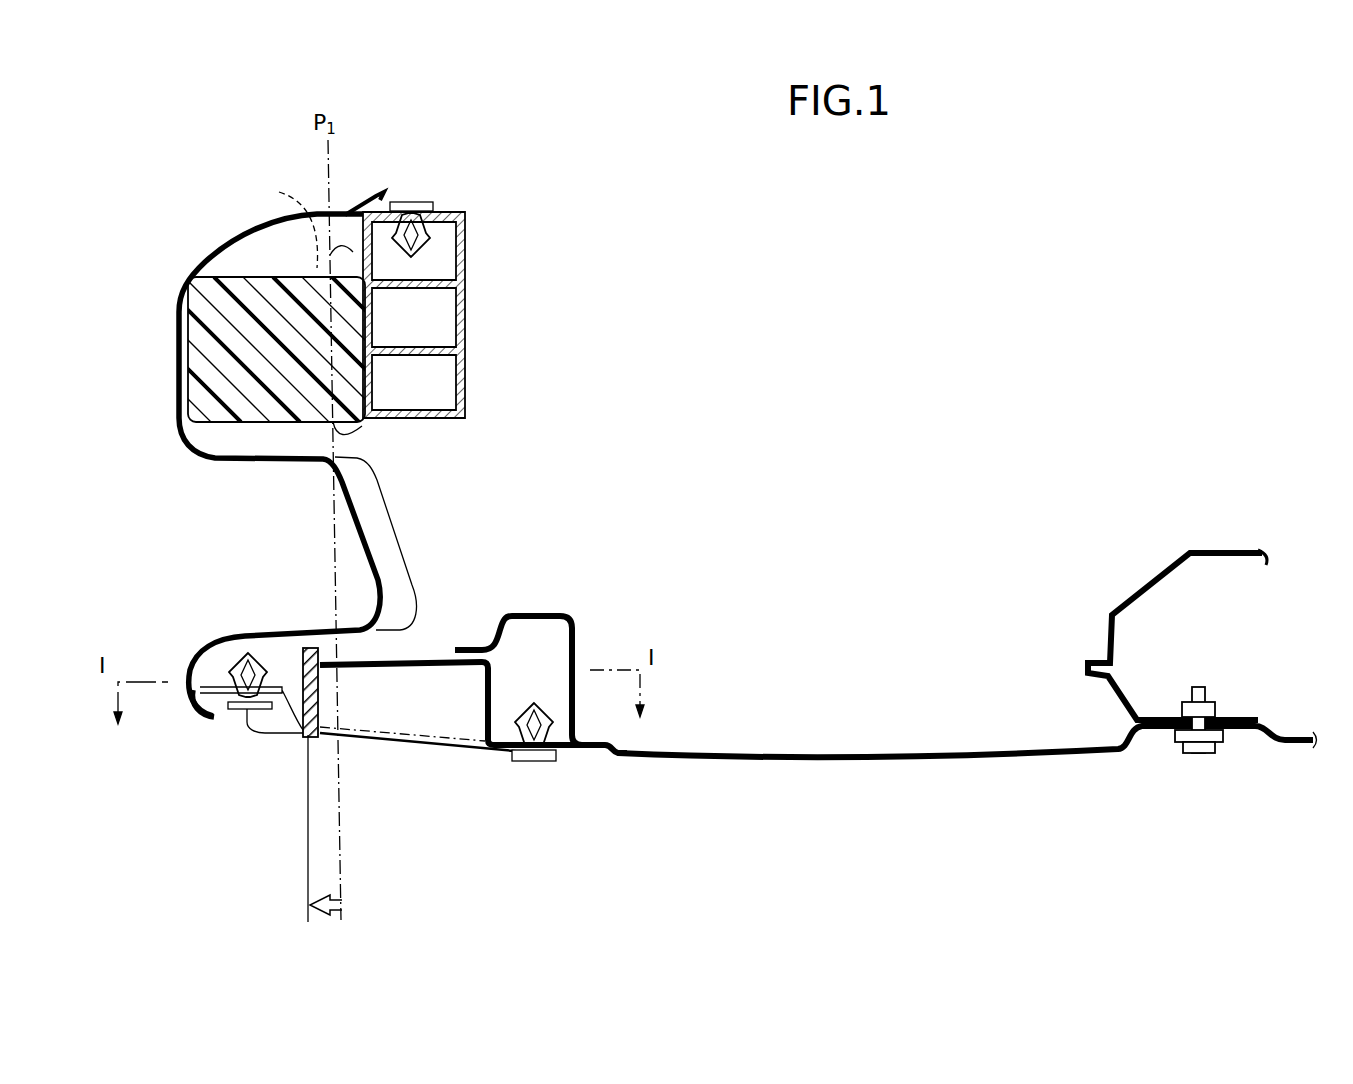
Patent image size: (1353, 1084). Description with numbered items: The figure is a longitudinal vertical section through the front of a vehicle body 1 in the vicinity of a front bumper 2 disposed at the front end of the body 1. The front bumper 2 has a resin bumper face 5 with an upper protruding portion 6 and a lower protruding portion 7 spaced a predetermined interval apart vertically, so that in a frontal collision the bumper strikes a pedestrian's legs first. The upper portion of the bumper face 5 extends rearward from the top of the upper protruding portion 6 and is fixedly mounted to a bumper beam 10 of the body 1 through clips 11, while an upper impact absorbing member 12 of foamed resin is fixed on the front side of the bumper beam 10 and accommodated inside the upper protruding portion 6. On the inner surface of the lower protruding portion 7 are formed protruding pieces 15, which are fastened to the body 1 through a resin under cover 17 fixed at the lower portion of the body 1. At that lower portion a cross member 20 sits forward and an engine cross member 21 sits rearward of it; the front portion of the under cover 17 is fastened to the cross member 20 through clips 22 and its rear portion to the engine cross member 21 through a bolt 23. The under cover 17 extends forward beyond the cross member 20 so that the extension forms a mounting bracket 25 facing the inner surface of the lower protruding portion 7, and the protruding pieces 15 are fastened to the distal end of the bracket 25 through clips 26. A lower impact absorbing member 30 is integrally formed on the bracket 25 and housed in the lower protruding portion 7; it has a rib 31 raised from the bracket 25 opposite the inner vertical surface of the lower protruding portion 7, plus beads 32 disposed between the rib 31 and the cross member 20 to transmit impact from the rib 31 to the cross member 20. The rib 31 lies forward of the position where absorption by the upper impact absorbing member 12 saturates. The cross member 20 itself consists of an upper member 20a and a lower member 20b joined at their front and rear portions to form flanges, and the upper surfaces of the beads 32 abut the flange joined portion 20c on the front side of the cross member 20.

The vehicle body 1 is at (782, 500).
The front bumper 2 is at (189, 165).
The bumper face 5 is at (150, 262).
The upper protruding portion 6 is at (212, 246).
The lower protruding portion 7 is at (192, 658).
The bumper beam 10 is at (468, 248).
The clips 11 is at (408, 201).
The upper impact absorbing member 12 is at (273, 277).
The protruding pieces 15 is at (218, 655).
The under cover 17 is at (876, 783).
The cross member 20 is at (588, 620).
The upper member 20a is at (537, 612).
The lower member 20b is at (500, 754).
The flange joined portion 20c is at (472, 640).
The engine cross member 21 is at (1197, 537).
The clips 22 is at (548, 765).
The bolt 23 is at (1200, 755).
The mounting bracket 25 is at (410, 748).
The clips 26 is at (238, 712).
The lower impact absorbing member 30 is at (432, 640).
The rib 31 is at (300, 736).
The beads 32 is at (447, 672).